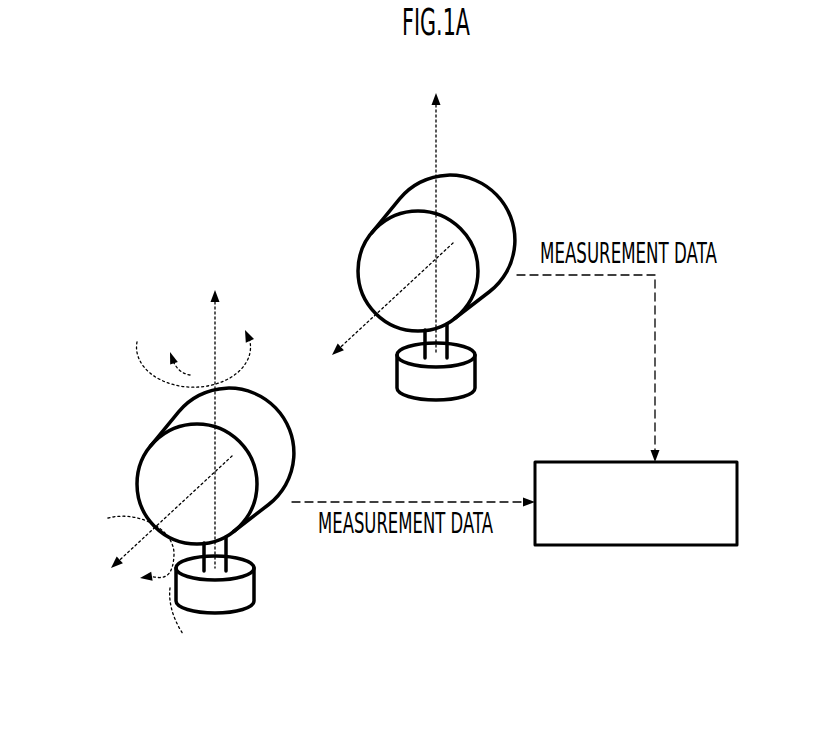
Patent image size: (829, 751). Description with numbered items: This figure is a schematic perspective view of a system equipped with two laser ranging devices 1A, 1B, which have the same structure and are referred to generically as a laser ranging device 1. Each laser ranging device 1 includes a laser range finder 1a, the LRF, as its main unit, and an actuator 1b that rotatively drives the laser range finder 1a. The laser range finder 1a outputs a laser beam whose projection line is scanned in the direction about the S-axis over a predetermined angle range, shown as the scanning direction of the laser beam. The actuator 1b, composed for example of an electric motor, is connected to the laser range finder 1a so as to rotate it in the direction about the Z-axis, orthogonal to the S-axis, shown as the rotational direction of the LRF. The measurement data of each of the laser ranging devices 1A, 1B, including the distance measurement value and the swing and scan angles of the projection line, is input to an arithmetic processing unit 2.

The laser ranging device 1 is at (347, 375).
The laser ranging device 1A is at (116, 412).
The laser ranging device 1B is at (338, 199).
The laser range finder (LRF) 1a is at (470, 197).
The actuator 1b is at (476, 368).
The arithmetic processing unit 2 is at (575, 462).